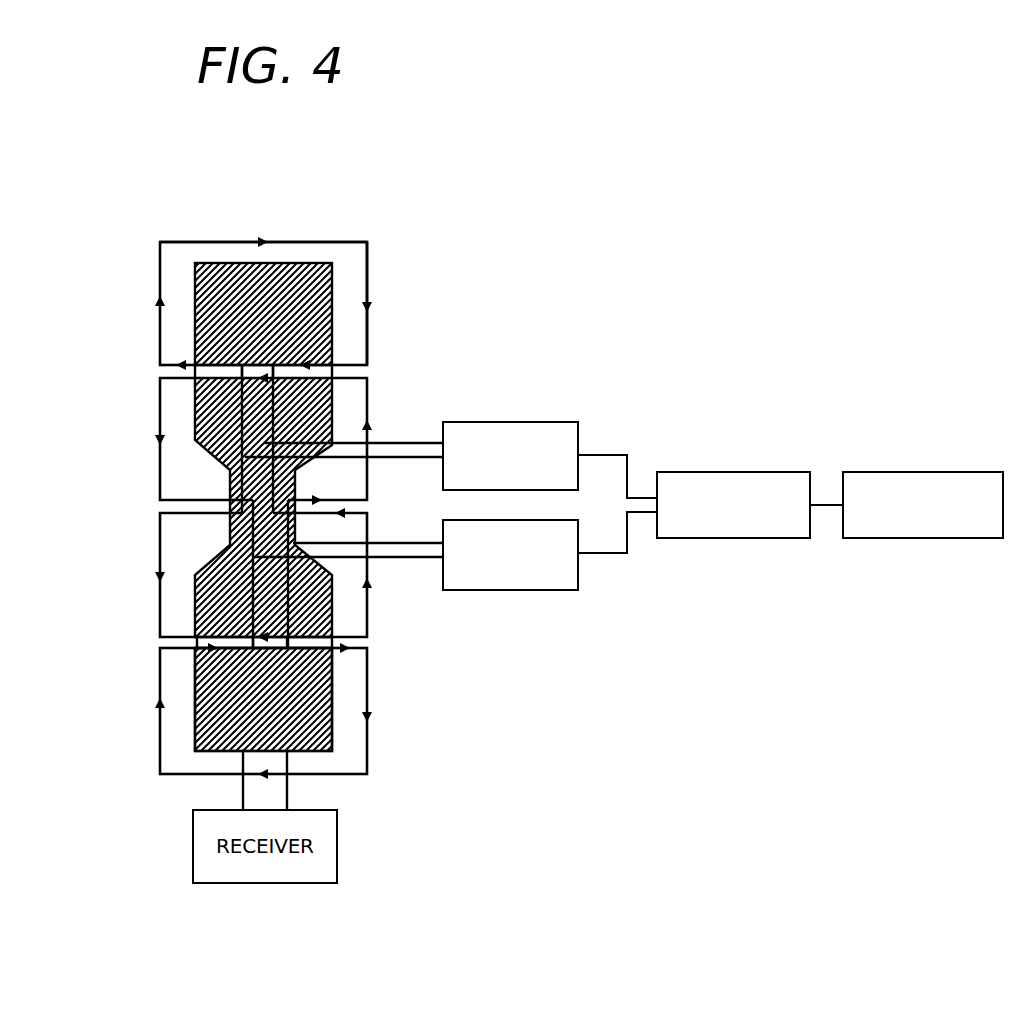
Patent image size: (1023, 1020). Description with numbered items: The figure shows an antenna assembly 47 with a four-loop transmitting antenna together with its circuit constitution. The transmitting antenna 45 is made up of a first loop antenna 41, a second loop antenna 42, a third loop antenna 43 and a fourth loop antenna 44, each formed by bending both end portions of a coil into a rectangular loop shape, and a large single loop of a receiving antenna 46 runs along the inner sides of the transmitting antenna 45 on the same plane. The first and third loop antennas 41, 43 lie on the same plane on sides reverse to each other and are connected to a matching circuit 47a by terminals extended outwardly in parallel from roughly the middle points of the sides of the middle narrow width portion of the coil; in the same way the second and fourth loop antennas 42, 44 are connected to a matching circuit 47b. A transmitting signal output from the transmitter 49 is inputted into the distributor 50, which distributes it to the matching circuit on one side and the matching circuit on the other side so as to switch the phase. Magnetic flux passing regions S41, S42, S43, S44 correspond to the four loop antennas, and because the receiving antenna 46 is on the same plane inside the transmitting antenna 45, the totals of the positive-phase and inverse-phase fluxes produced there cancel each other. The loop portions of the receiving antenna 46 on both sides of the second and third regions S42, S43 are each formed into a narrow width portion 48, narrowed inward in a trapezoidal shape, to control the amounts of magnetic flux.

The first loop antenna 41 is at (160, 263).
The second loop antenna 42 is at (160, 395).
The third loop antenna 43 is at (160, 605).
The fourth loop antenna 44 is at (160, 732).
The transmitting antenna 45 is at (353, 237).
The receiving antenna 46 is at (332, 742).
The antenna assembly 47 is at (287, 228).
The matching circuit 47a is at (540, 422).
The matching circuit 47b is at (540, 590).
The narrow width portion 48 is at (290, 483).
The transmitter 49 is at (958, 472).
The distributor 50 is at (773, 472).
The first magnetic flux passing region S41 is at (262, 300).
The second magnetic flux passing region S42 is at (263, 433).
The third magnetic flux passing region S43 is at (273, 577).
The fourth magnetic flux passing region S44 is at (277, 707).